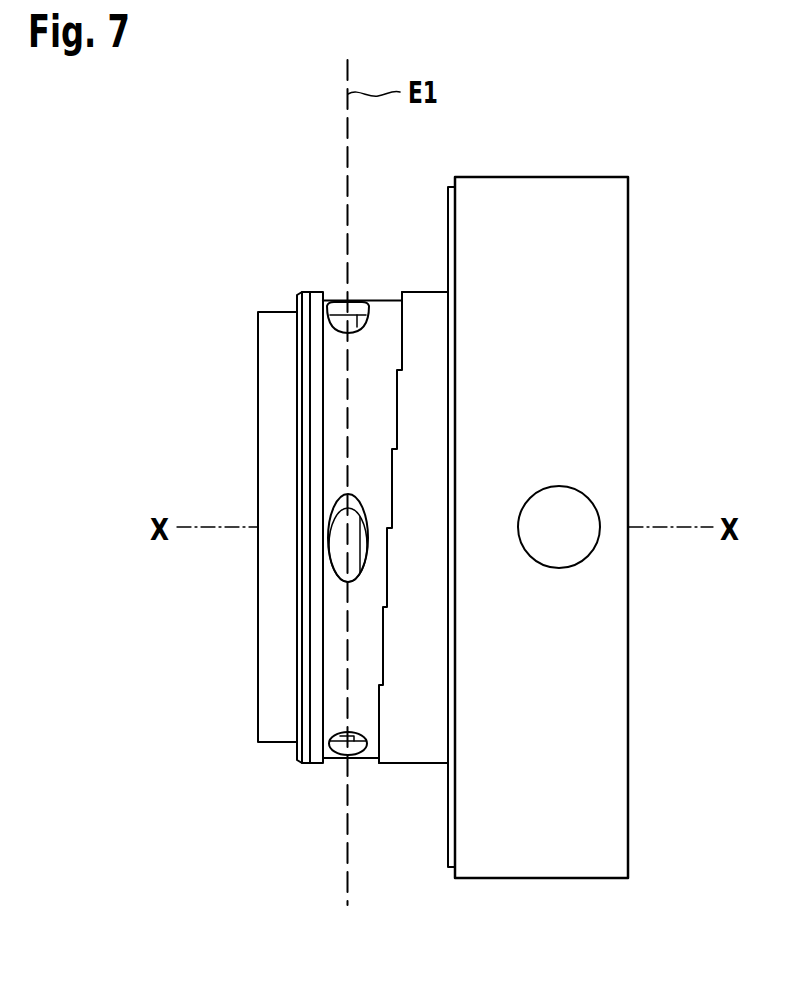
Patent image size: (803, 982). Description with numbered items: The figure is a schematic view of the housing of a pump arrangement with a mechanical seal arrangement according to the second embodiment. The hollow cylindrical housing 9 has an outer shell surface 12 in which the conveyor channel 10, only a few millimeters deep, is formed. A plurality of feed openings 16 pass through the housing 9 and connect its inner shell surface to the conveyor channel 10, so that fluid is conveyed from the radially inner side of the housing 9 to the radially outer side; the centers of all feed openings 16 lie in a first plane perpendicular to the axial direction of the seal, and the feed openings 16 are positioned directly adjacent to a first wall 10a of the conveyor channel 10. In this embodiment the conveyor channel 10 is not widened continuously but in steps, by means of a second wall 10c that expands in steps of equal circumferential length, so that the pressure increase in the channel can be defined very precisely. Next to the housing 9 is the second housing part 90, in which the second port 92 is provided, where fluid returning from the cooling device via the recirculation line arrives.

The hollow cylindrical housing 9 is at (316, 300).
The conveyor channel 10 is at (291, 527).
The first wall 10a is at (340, 609).
The second wall 10c is at (390, 468).
The outer shell surface 12 is at (415, 730).
The feed openings 16 is at (347, 322).
The second housing part 90 is at (598, 277).
The second port 92 is at (572, 517).